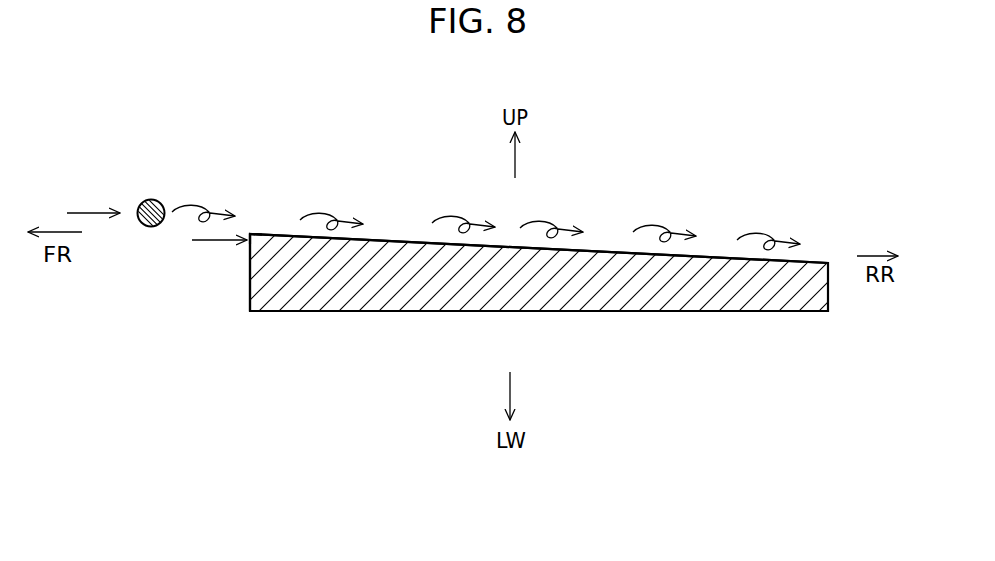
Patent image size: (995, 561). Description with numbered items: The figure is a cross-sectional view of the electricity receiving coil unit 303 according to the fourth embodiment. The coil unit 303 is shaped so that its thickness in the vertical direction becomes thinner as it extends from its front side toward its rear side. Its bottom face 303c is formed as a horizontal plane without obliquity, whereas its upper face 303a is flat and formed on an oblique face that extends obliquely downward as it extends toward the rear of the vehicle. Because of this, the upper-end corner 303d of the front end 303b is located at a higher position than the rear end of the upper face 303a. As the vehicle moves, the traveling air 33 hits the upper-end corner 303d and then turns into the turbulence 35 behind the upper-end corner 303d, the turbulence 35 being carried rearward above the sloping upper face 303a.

The traveling air 33 is at (92, 210).
The turbulence 35 is at (193, 205).
The electricity receiving coil unit 303 is at (740, 315).
The upper face 303a is at (610, 248).
The front end 303b is at (250, 278).
The bottom face 303c is at (412, 312).
The upper-end corner 303d is at (251, 232).